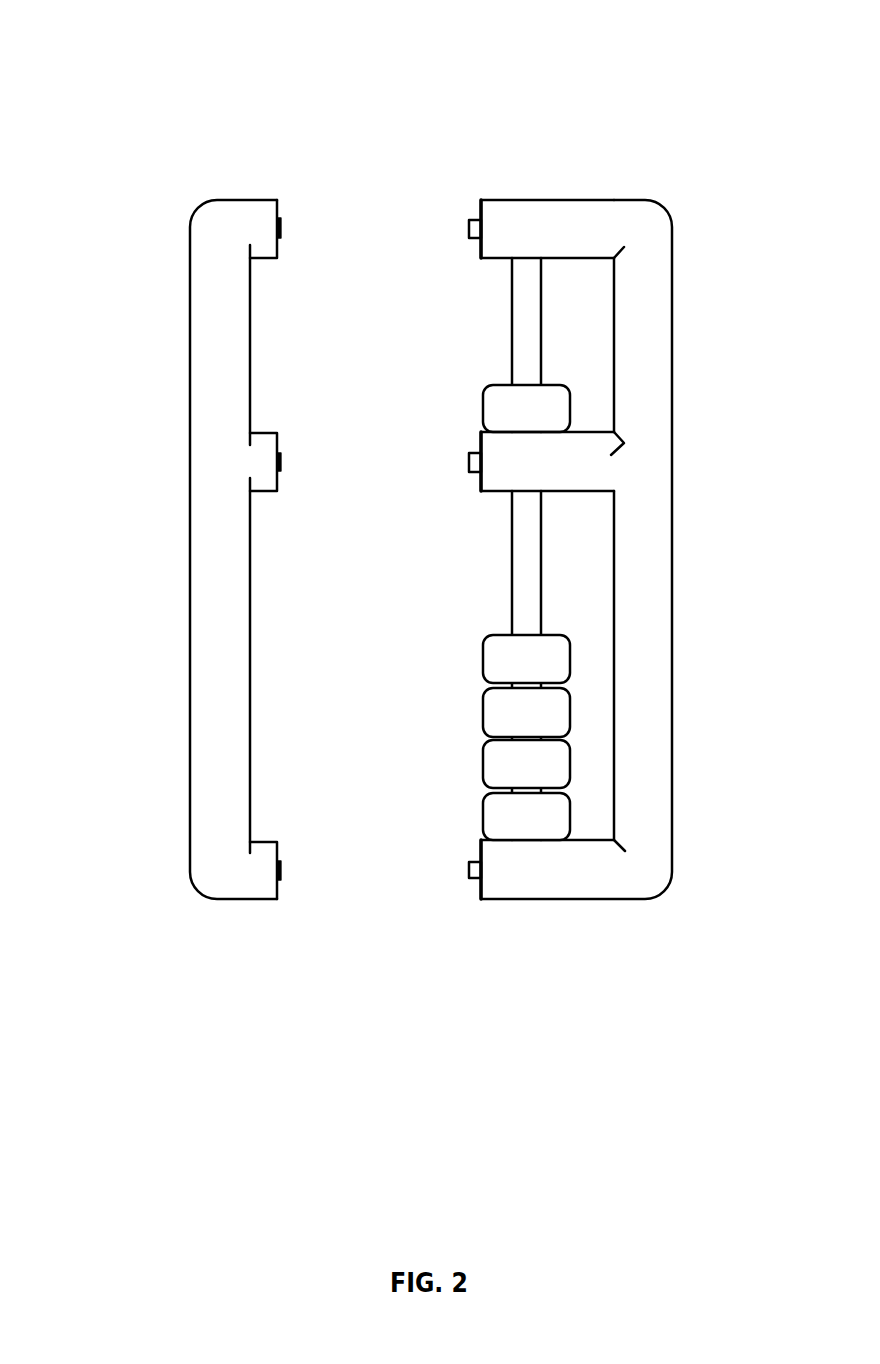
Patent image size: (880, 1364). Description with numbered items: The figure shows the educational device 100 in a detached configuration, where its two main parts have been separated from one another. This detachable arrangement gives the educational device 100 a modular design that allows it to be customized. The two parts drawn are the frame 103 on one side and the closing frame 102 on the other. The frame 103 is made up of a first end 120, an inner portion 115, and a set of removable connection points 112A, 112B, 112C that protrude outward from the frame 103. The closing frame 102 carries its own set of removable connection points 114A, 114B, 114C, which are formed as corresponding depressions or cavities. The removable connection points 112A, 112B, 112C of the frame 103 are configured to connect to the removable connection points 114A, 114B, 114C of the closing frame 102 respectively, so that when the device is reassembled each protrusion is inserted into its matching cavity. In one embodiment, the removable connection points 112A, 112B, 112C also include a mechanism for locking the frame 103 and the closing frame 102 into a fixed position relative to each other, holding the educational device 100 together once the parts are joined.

The educational device 100 is at (108, 32).
The closing frame 102 is at (212, 198).
The frame 103 is at (572, 197).
The removable connection point 112A is at (462, 222).
The removable connection point 112B is at (458, 457).
The removable connection point 112C is at (463, 870).
The removable connection point 114A is at (290, 218).
The removable connection point 114B is at (295, 463).
The removable connection point 114C is at (293, 865).
The inner portion 115 is at (595, 467).
The first end 120 is at (585, 233).